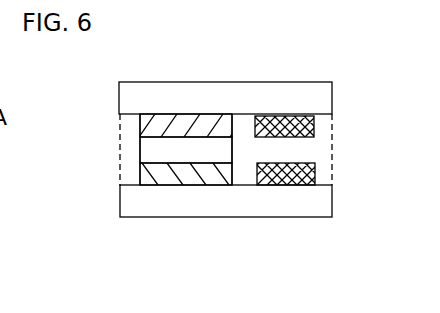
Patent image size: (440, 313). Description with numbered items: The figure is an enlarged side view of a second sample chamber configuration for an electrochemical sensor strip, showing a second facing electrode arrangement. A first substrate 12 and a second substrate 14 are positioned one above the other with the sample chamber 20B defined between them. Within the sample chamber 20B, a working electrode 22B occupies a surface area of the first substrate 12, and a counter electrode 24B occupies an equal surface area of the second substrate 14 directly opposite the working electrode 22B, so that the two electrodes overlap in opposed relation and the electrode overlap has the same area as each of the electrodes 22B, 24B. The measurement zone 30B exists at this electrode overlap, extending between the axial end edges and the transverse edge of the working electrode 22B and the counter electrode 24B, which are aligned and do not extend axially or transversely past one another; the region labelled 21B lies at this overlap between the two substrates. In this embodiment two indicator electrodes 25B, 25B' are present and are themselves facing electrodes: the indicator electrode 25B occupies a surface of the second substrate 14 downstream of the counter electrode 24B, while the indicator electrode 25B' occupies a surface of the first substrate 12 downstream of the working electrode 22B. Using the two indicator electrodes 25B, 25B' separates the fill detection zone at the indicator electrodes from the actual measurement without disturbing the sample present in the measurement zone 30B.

The first substrate 12 is at (238, 218).
The second substrate 14 is at (242, 82).
The sample chamber 20B is at (130, 123).
The stack side walls 21B is at (116, 150).
The working electrode 22B is at (232, 168).
The counter electrode 24B is at (232, 128).
The indicator electrode 25B is at (313, 117).
The indicator electrode 25B' is at (314, 166).
The measurement zone 30B is at (160, 143).